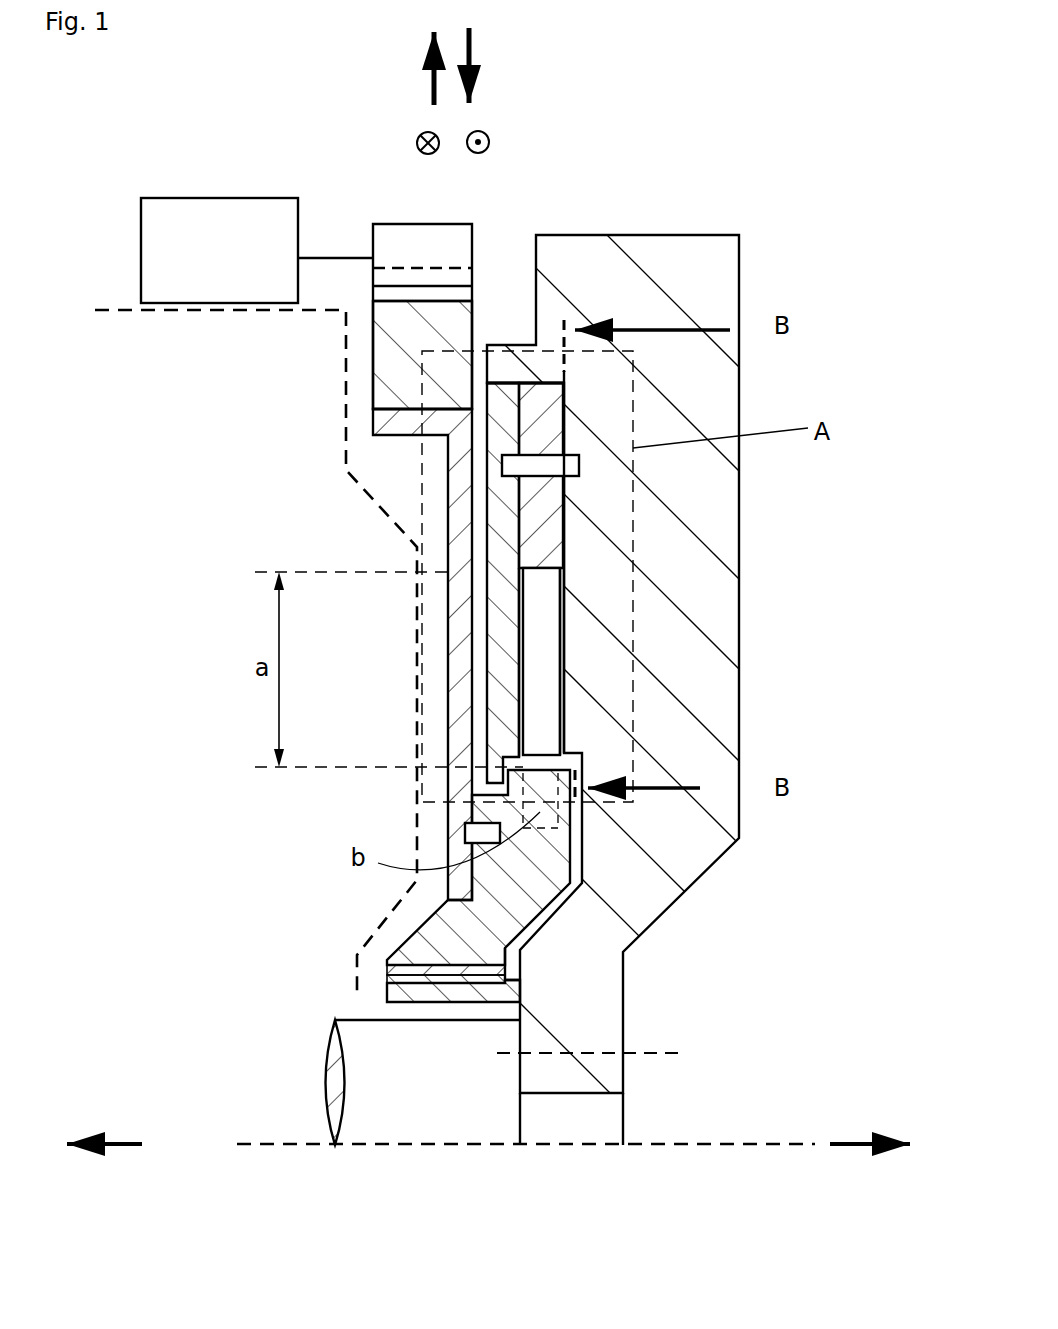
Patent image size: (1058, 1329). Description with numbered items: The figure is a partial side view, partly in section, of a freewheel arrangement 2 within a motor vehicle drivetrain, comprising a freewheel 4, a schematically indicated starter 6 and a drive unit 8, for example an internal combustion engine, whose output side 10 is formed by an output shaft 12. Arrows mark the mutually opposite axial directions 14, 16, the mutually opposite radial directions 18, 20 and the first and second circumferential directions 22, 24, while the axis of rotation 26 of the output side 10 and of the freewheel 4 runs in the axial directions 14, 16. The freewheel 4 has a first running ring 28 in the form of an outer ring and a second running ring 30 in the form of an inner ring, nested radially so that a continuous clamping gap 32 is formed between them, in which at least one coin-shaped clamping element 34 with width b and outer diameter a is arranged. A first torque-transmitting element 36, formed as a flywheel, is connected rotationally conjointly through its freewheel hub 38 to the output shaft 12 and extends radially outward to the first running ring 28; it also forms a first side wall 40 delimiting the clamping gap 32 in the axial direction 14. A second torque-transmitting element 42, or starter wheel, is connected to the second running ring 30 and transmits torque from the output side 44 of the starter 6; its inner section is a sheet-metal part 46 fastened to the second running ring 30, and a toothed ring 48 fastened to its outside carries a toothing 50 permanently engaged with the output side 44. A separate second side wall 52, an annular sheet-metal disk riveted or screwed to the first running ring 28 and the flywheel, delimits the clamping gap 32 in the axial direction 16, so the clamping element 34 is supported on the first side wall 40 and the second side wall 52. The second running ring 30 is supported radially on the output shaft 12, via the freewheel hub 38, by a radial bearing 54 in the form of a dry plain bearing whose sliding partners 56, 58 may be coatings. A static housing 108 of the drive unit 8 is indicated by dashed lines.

The freewheel arrangement 2 is at (690, 125).
The freewheel 4 is at (510, 312).
The starter 6 is at (203, 259).
The drive unit 8 is at (183, 727).
The output side 10 is at (527, 1133).
The output shaft 12 is at (422, 1117).
The axial direction 14 is at (865, 1181).
The axial direction 16 is at (110, 1147).
The radial direction 18 is at (432, 90).
The radial direction 20 is at (471, 47).
The first circumferential direction 22 is at (416, 143).
The second circumferential direction 24 is at (490, 130).
The axis of rotation 26 is at (288, 1148).
The first running ring 28 is at (543, 418).
The second running ring 30 is at (535, 845).
The clamping gap 32 is at (560, 608).
The clamping element 34 is at (540, 665).
The first torque-transmitting element 36 is at (720, 521).
The freewheel hub 38 is at (573, 997).
The first side wall 40 is at (572, 643).
The second torque-transmitting element 42 is at (442, 588).
The output side of the starter 44 is at (393, 240).
The sheet-metal part 46 is at (460, 660).
The toothed ring 48 is at (392, 330).
The toothing 50 is at (434, 293).
The second side wall 52 is at (500, 637).
The radial bearing 54 is at (380, 967).
The sliding partner 56 is at (413, 970).
The sliding partner 58 is at (403, 981).
The static housing 108 is at (345, 391).